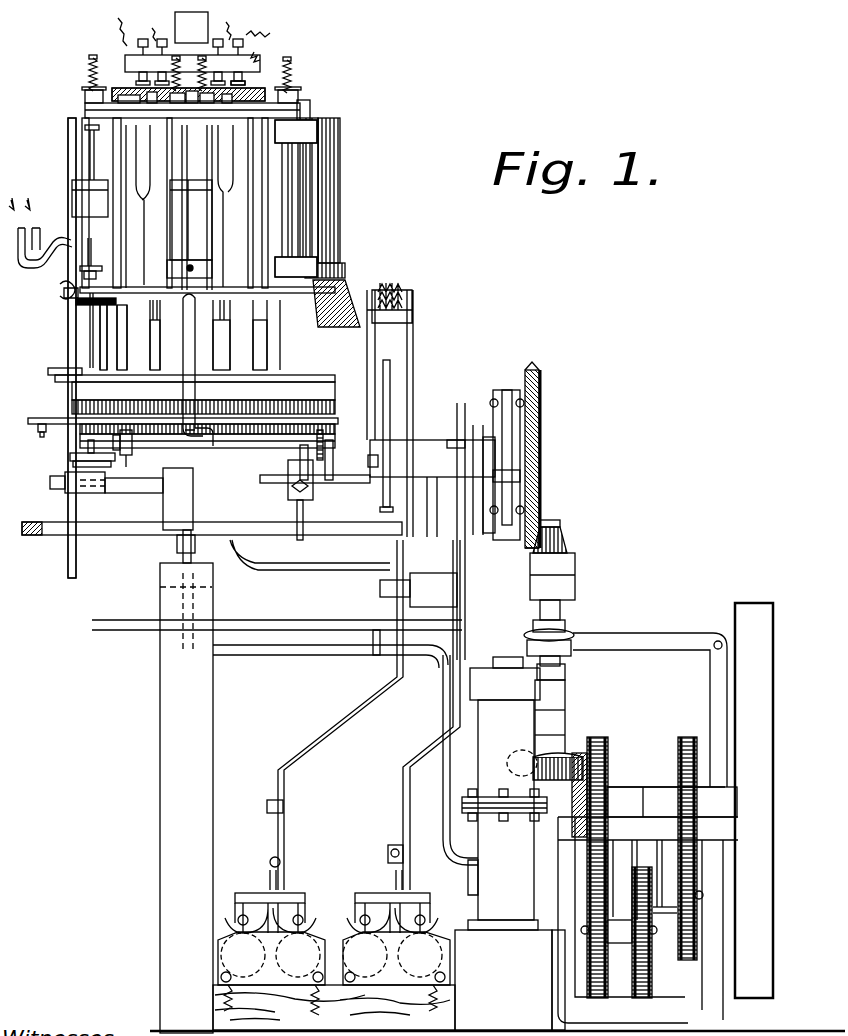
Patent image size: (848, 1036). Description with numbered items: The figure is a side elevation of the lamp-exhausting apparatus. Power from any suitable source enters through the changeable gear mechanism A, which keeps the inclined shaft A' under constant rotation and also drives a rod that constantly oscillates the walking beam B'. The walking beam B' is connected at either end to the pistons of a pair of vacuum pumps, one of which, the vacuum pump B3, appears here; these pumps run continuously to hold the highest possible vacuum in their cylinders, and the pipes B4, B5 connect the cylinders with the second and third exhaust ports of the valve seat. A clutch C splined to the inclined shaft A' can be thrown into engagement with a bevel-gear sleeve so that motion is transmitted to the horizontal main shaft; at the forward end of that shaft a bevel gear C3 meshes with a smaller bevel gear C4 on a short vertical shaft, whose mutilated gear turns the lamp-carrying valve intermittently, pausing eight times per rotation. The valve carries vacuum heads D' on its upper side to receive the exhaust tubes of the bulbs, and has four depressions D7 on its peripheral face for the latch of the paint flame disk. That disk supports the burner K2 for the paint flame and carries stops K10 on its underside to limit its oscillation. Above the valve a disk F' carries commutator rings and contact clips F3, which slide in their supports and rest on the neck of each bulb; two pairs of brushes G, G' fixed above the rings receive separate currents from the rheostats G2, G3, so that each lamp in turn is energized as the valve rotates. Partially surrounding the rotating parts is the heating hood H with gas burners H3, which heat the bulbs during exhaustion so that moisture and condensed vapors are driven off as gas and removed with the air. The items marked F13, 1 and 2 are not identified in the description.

The heating hood H is at (332, 160).
The gas burners H3 is at (246, 272).
The contact clips F3 is at (90, 171).
The slide block F13 is at (203, 214).
The disk F' is at (205, 64).
The brushes G' is at (182, 82).
The brushes G is at (245, 80).
The vacuum heads D' is at (54, 348).
The depressions D7 is at (178, 384).
The stops K10 is at (34, 440).
The burner K2 is at (210, 454).
The bevel gear C3 is at (325, 455).
The smaller bevel gear C4 is at (315, 492).
The pipe B4 is at (225, 507).
The walking beam B' is at (505, 453).
The clutch C is at (573, 640).
The inclined shaft A' is at (556, 678).
The changeable gear mechanism A is at (665, 813).
The vacuum pump B3 is at (504, 842).
The pipe B5 is at (292, 660).
The rheostat G3 is at (277, 908).
The rheostat G2 is at (356, 932).
The bobbin 1 is at (273, 1013).
The bobbin 2 is at (375, 1013).